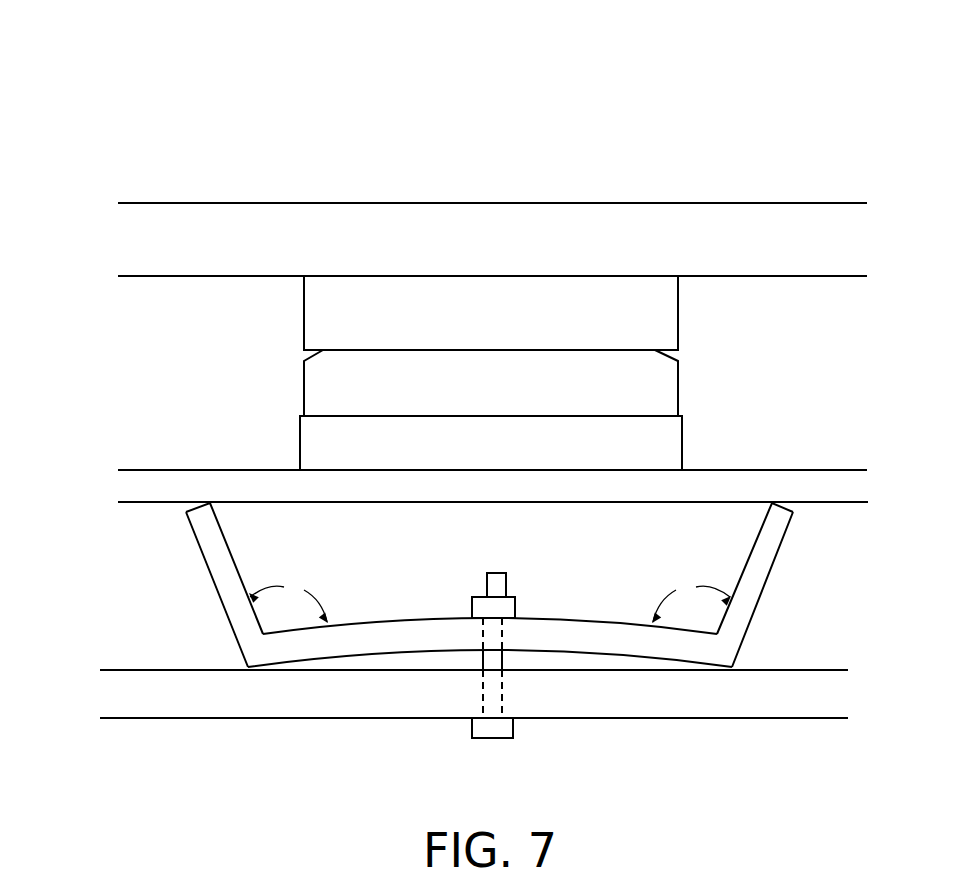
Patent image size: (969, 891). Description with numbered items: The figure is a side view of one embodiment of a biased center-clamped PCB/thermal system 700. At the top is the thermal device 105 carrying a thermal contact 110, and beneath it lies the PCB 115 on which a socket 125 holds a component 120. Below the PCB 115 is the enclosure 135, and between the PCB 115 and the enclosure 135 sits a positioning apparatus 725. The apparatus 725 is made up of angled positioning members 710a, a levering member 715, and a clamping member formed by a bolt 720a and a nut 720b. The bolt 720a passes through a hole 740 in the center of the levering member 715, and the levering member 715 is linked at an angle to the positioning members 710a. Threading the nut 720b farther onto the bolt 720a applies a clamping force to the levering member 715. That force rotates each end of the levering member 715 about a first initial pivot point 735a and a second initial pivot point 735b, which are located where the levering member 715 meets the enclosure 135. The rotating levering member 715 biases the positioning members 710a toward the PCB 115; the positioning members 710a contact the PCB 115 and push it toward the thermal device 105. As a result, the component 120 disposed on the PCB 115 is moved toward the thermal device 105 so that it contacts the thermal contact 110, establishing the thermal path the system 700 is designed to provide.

The biased center-clamped PCB/thermal system 700 is at (86, 78).
The thermal device 105 is at (198, 203).
The thermal contact 110 is at (678, 297).
The component 120 is at (304, 382).
The socket 125 is at (682, 437).
The PCB 115 is at (516, 496).
The positioning member 710a is at (211, 575).
The levering member 715 is at (410, 622).
The nut 720b is at (472, 596).
The bolt 720a is at (488, 738).
The hole 740 is at (507, 645).
The positioning apparatus 725 is at (569, 598).
The enclosure 135 is at (338, 718).
The first initial pivot point 735a is at (248, 670).
The second initial pivot point 735b is at (732, 670).